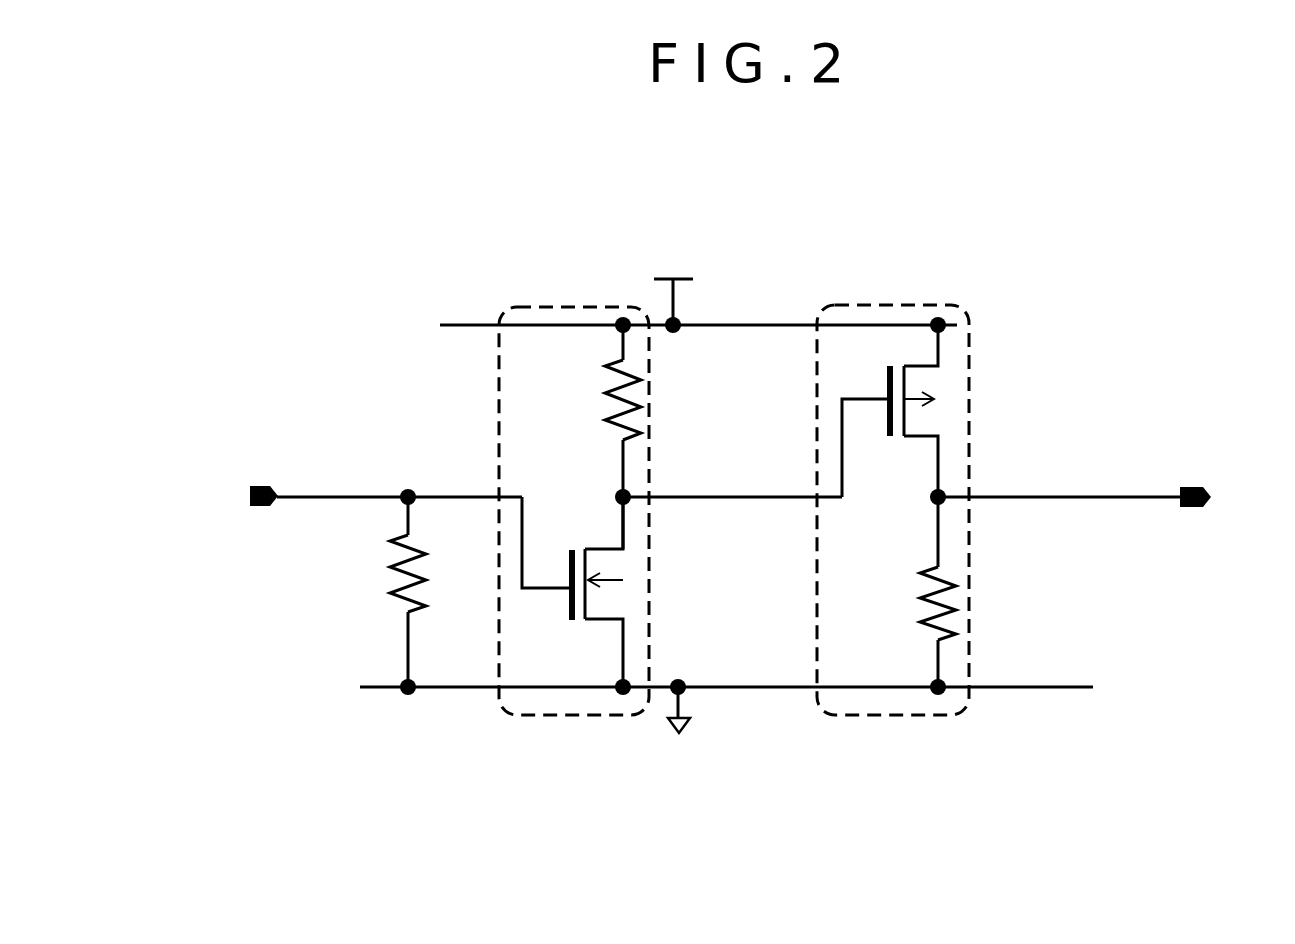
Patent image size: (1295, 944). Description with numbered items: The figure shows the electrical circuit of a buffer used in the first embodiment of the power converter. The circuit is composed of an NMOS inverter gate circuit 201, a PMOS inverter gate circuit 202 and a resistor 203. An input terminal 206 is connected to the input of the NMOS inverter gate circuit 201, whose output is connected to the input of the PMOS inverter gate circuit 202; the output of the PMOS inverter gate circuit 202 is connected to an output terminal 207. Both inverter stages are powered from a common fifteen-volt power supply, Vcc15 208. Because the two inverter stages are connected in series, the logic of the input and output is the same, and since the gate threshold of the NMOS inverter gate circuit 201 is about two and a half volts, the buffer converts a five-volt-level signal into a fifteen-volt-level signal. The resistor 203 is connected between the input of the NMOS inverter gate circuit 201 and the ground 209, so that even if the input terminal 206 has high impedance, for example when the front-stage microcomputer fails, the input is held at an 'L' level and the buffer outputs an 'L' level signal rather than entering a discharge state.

The NMOS inverter gate circuit 201 is at (537, 306).
The PMOS inverter gate circuit 202 is at (897, 305).
The resistor 203 is at (383, 580).
The input terminal 206 is at (259, 484).
The output terminal 207 is at (1191, 484).
The Vcc15 power supply 208 is at (680, 232).
The ground 209 is at (680, 776).